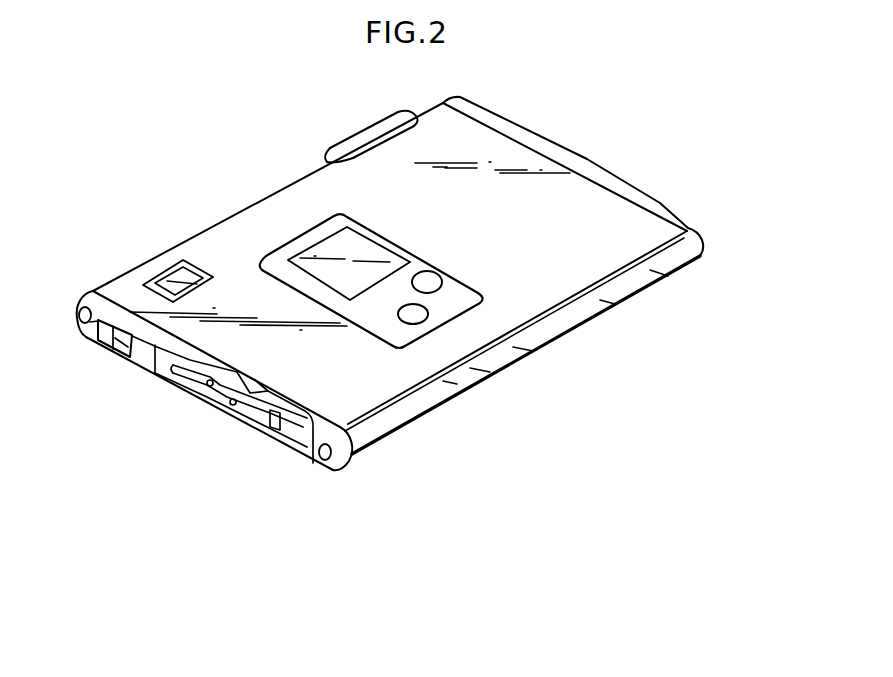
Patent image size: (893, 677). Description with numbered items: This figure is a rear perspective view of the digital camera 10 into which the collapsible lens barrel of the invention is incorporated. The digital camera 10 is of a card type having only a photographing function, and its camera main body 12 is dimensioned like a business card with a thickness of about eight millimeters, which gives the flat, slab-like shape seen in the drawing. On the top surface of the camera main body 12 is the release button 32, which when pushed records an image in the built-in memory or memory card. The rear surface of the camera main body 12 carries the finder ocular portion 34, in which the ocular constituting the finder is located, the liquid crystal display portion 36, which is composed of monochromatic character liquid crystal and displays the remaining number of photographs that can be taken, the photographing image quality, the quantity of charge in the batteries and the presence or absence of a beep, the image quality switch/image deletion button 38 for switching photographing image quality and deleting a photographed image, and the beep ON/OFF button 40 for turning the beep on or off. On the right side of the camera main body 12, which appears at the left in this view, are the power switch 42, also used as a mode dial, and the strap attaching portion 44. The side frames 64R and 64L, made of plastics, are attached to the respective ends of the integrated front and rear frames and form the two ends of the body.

The digital camera 10 is at (209, 172).
The camera main body 12 is at (555, 287).
The release button 32 is at (368, 140).
The finder ocular portion 34 is at (173, 283).
The liquid crystal display portion 36 is at (360, 260).
The image quality switch/image deletion button 38 is at (422, 283).
The beep ON/OFF button 40 is at (412, 313).
The power switch 42 is at (276, 490).
The strap attaching portion 44 is at (122, 346).
The side frame 64L is at (698, 226).
The side frame 64R is at (333, 470).